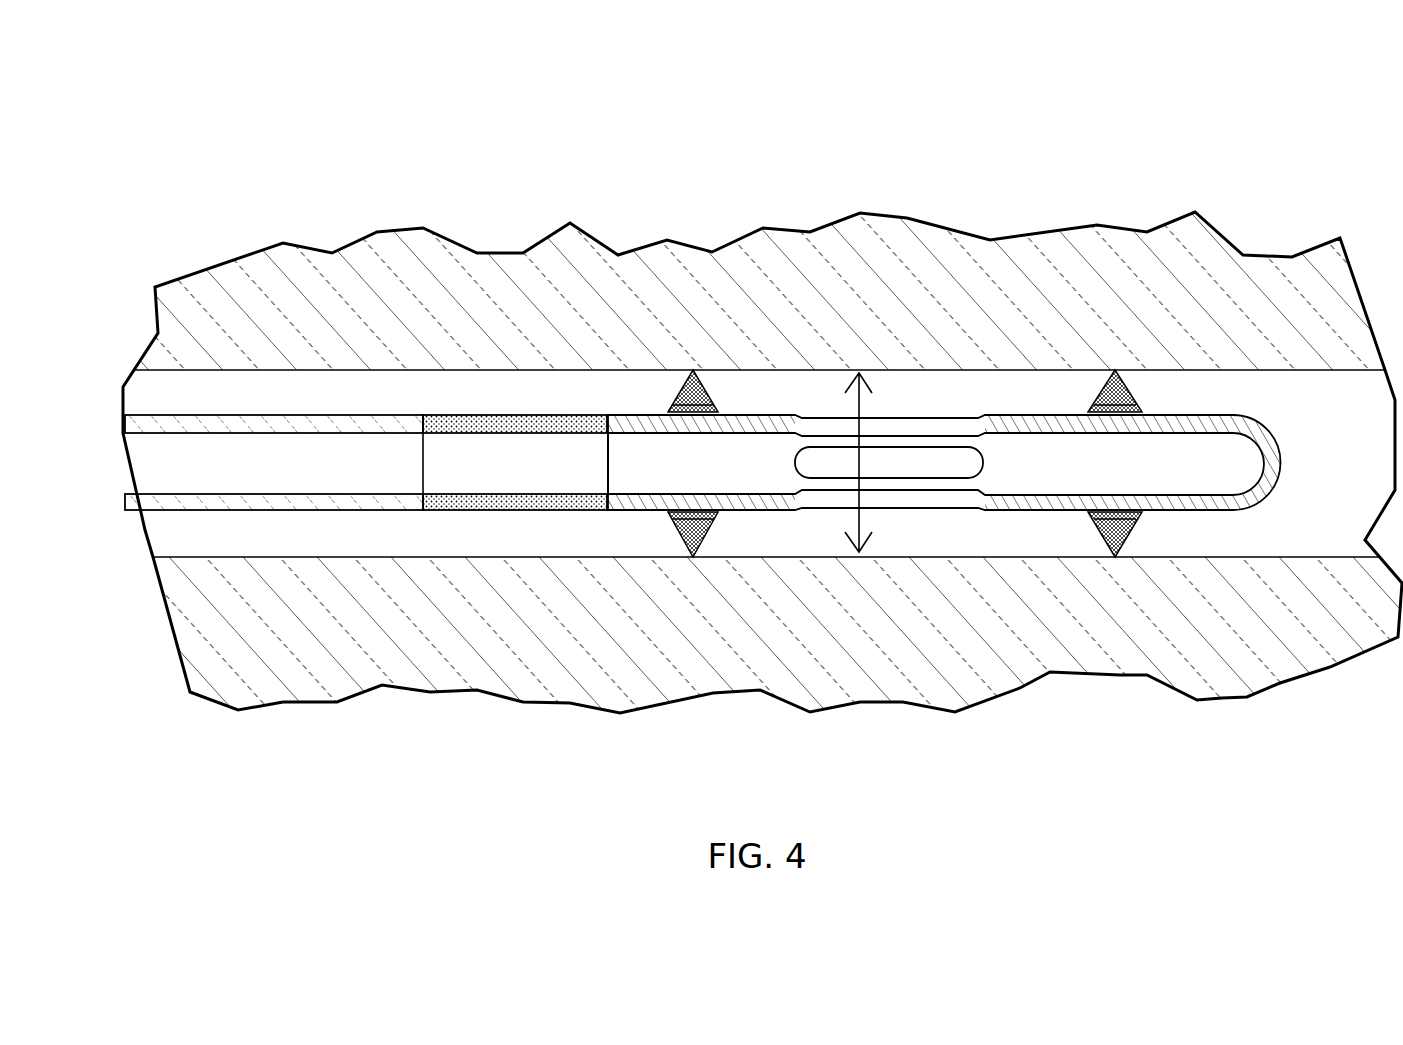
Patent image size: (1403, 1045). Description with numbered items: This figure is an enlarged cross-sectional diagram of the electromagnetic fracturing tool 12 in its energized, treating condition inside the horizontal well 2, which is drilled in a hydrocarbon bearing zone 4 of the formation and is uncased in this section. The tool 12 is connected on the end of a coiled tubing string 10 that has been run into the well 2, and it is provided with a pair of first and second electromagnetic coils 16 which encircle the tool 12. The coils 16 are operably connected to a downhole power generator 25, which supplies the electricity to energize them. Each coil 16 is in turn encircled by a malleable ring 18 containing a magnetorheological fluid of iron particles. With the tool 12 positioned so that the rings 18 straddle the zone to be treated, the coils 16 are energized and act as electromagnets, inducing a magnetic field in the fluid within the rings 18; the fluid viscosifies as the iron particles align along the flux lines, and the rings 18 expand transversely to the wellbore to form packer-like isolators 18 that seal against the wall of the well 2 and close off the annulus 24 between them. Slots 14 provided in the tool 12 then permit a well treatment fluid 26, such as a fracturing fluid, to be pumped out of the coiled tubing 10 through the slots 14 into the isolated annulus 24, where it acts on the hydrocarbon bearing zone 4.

The horizontal well 2 is at (813, 370).
The hydrocarbon bearing zone 4 is at (521, 343).
The coiled tubing string 10 is at (370, 417).
The electromagnetic fracturing tool 12 is at (1048, 373).
The slots 14 is at (947, 428).
The electromagnetic coils 16 is at (668, 410).
The malleable ring 18 is at (700, 410).
The annulus 24 is at (1012, 392).
The downhole power generator 25 is at (525, 510).
The well treatment fluid 26 is at (863, 412).